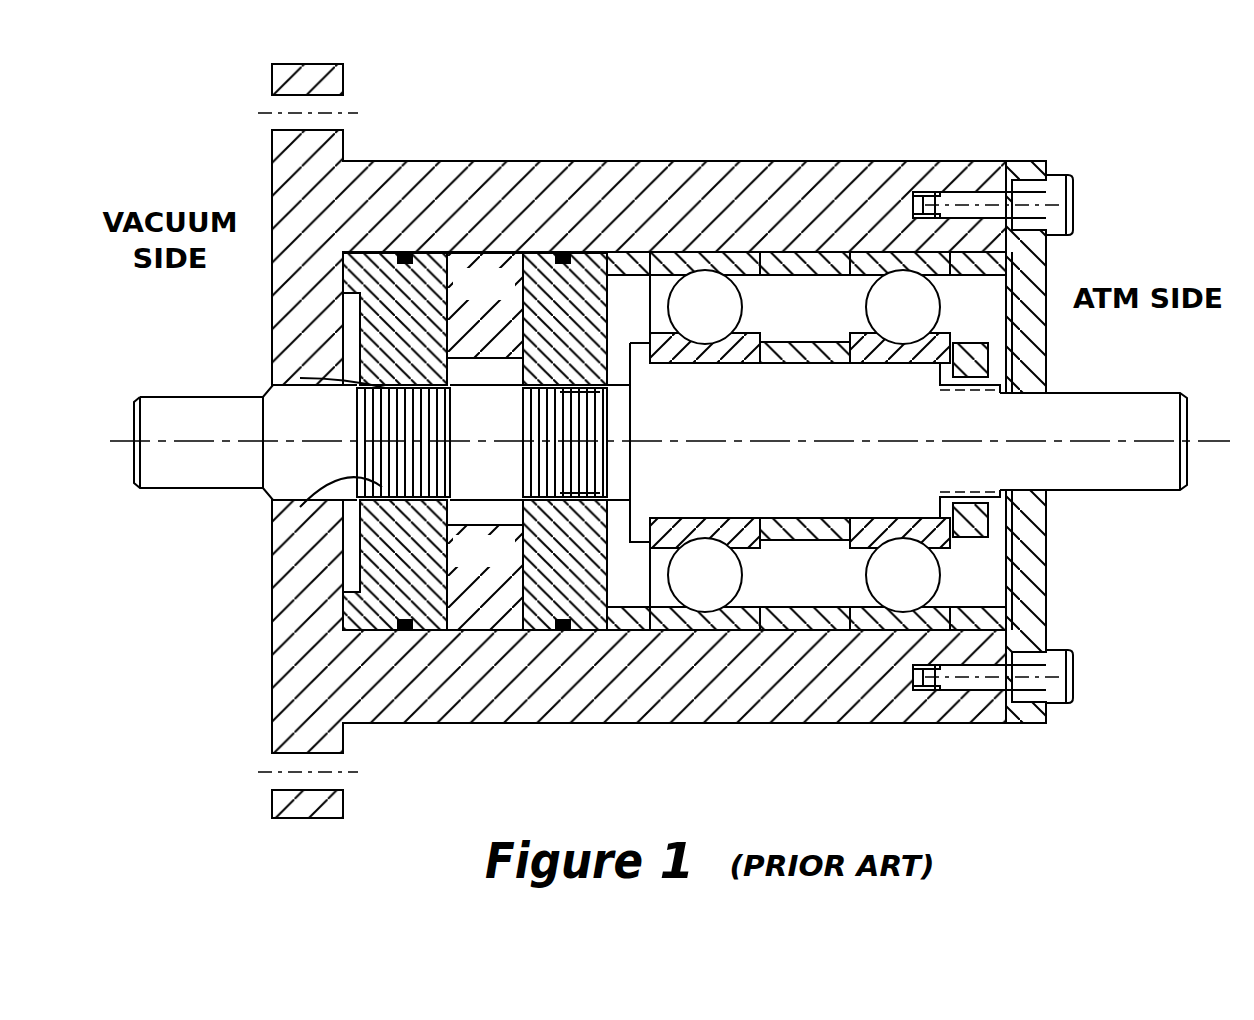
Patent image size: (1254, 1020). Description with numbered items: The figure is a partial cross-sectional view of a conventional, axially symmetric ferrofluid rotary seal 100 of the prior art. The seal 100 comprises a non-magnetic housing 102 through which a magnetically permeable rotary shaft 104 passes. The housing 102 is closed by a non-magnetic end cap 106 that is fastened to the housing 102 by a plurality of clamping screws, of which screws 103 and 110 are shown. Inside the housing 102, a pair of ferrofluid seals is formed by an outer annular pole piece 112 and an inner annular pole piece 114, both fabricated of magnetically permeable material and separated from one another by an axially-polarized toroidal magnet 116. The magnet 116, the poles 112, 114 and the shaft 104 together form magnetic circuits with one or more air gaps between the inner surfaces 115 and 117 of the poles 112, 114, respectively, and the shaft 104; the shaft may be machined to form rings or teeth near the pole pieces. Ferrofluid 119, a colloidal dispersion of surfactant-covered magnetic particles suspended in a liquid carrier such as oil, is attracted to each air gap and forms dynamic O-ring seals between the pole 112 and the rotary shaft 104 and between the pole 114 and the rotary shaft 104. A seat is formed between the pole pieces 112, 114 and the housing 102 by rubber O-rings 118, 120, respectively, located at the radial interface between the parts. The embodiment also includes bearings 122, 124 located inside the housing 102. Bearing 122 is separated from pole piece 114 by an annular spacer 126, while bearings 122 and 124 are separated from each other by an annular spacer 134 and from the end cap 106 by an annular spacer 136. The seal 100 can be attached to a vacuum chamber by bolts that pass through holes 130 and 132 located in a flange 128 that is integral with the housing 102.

The seal 100 is at (976, 155).
The housing 102 is at (760, 692).
The clamping screw 103 is at (1060, 192).
The rotary shaft 104 is at (1120, 472).
The end cap 106 is at (1030, 548).
The clamping screw 110 is at (1060, 660).
The outer annular pole piece 112 is at (380, 555).
The inner annular pole piece 114 is at (530, 292).
The inner surface of pole piece 112 115 is at (300, 508).
The toroidal magnet 116 is at (492, 622).
The inner surface of pole piece 114 117 is at (578, 485).
The rubber O-ring 118 is at (405, 630).
The ferrofluid 119 is at (578, 380).
The rubber O-ring 120 is at (562, 252).
The bearing 122 is at (728, 262).
The bearing 124 is at (873, 264).
The annular spacer 126 is at (638, 627).
The flange 128 is at (278, 80).
The hole 130 is at (278, 120).
The hole 132 is at (285, 778).
The annular spacer 134 is at (835, 617).
The annular spacer 136 is at (970, 627).